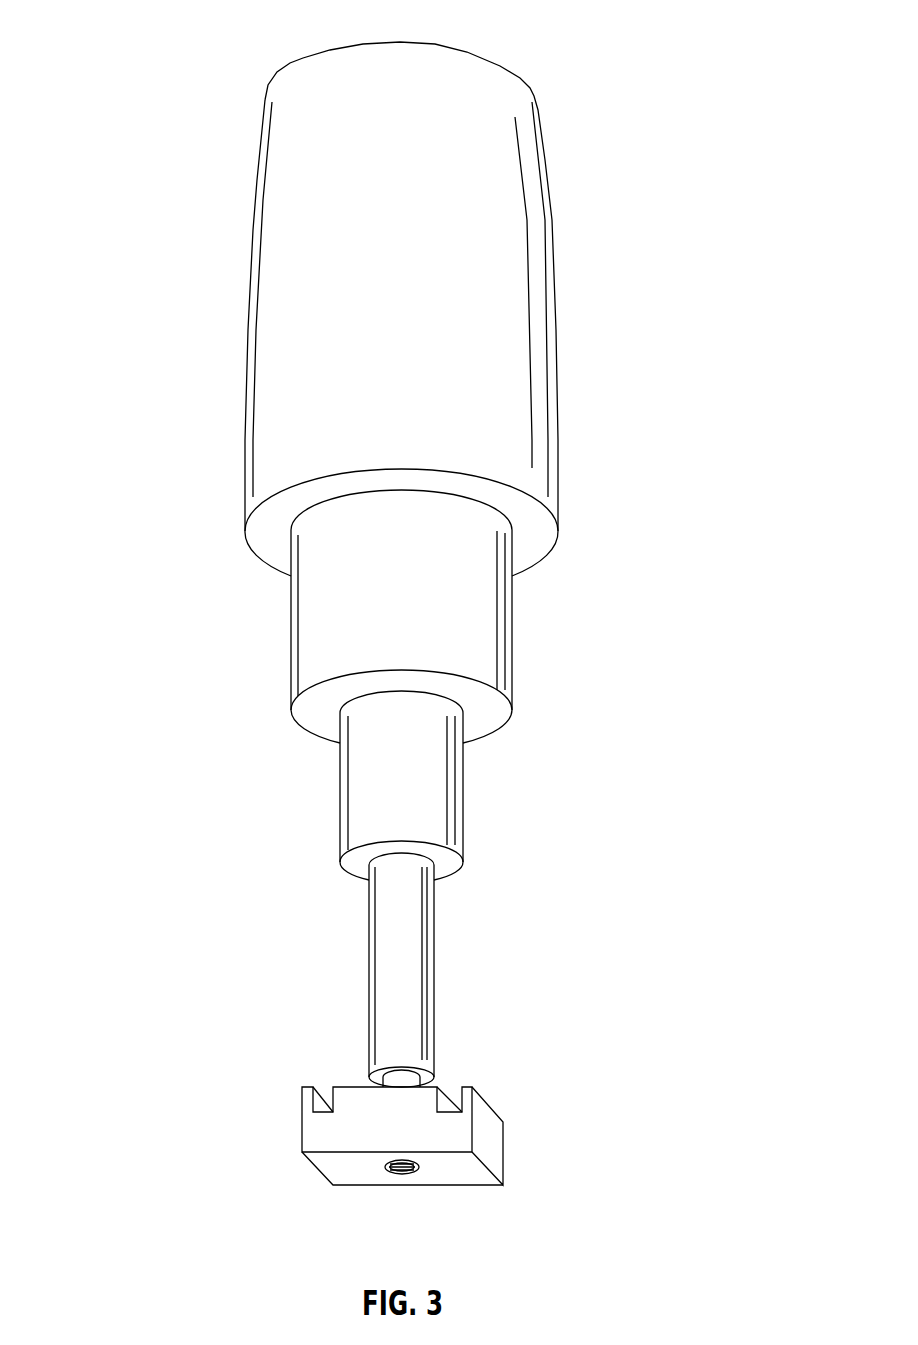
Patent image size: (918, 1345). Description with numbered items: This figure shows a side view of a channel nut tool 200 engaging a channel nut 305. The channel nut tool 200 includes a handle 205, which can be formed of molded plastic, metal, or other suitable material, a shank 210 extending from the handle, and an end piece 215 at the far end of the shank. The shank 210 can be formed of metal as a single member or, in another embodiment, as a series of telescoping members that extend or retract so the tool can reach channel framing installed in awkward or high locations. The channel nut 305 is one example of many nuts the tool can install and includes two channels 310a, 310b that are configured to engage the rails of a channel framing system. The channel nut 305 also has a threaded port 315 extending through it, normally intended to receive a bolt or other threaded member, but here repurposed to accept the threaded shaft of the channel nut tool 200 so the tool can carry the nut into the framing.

The channel nut tool 200 is at (231, 34).
The handle 205 is at (268, 302).
The shank 210 is at (129, 687).
The end piece 215 is at (446, 1078).
The channel nut 305 is at (312, 1133).
The channel 310a is at (307, 1095).
The channel 310b is at (463, 1098).
The threaded port 315 is at (412, 1172).